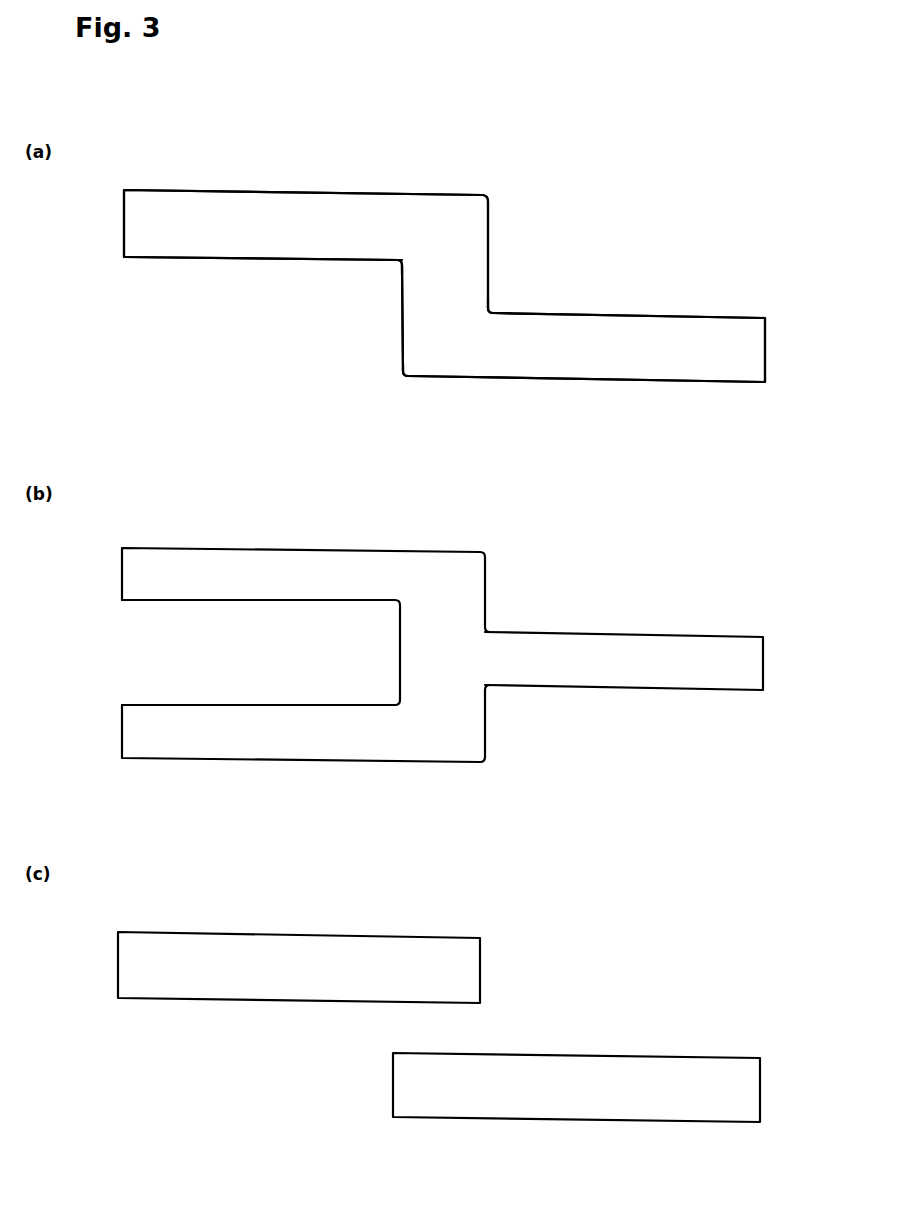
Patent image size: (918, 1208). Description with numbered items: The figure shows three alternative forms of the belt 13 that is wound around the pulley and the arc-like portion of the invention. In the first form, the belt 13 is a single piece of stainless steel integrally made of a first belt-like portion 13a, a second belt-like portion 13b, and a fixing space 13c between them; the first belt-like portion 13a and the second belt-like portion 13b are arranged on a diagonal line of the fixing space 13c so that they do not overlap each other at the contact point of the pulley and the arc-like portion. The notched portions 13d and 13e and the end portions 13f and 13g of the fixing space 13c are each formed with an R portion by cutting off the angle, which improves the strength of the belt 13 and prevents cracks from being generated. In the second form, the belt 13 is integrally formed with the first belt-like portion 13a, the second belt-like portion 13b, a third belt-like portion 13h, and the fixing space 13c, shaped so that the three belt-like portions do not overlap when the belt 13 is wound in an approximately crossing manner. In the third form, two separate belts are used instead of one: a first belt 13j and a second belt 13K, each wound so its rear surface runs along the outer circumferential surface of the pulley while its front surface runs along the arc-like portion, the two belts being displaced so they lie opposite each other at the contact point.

The belt 13 is at (512, 168).
The first belt-like portion 13a is at (178, 203).
The second belt-like portion 13b is at (653, 350).
The fixing space 13c is at (432, 311).
The notched portion 13d is at (385, 269).
The notched portion 13e is at (493, 311).
The end portion 13f is at (401, 380).
The end portion 13g is at (490, 197).
The third belt-like portion 13h is at (270, 735).
The first belt 13j is at (338, 950).
The second belt 13K is at (570, 1075).